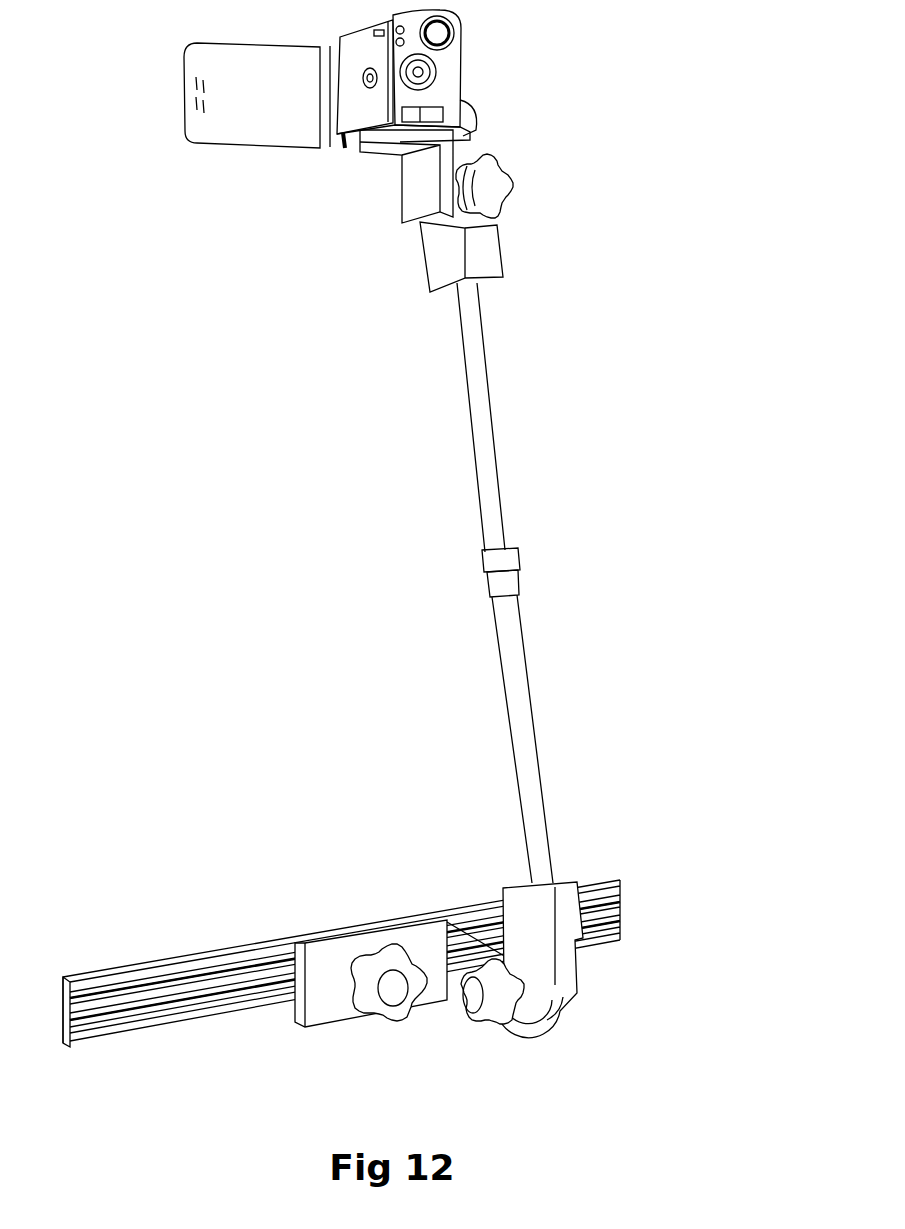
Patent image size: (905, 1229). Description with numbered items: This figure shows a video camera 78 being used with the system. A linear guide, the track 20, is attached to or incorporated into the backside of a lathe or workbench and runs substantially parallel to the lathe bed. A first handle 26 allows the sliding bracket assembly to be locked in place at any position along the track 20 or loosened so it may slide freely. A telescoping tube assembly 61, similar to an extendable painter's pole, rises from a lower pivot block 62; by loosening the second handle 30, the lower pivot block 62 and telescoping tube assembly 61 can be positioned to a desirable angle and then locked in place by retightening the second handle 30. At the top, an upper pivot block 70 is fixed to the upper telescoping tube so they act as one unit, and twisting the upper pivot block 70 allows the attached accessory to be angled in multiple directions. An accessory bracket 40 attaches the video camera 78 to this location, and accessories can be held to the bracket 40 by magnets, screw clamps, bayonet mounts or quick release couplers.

The track 20 is at (213, 963).
The first handle 26 is at (380, 1015).
The second handle 30 is at (510, 1028).
The accessory bracket 40 is at (415, 187).
The telescoping tube assembly 61 is at (503, 540).
The lower pivot block 62 is at (570, 960).
The upper pivot block 70 is at (490, 252).
The video camera 78 is at (458, 72).